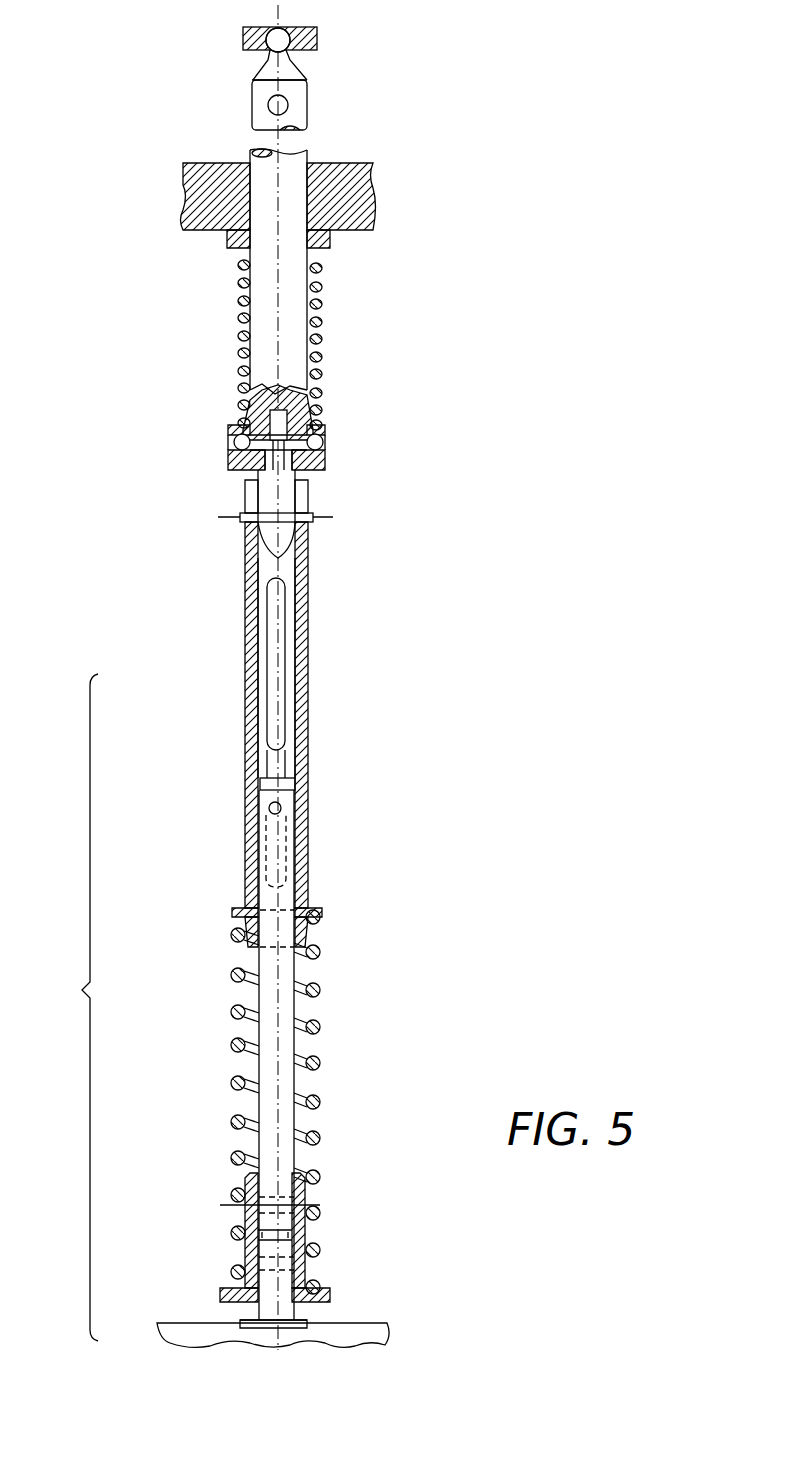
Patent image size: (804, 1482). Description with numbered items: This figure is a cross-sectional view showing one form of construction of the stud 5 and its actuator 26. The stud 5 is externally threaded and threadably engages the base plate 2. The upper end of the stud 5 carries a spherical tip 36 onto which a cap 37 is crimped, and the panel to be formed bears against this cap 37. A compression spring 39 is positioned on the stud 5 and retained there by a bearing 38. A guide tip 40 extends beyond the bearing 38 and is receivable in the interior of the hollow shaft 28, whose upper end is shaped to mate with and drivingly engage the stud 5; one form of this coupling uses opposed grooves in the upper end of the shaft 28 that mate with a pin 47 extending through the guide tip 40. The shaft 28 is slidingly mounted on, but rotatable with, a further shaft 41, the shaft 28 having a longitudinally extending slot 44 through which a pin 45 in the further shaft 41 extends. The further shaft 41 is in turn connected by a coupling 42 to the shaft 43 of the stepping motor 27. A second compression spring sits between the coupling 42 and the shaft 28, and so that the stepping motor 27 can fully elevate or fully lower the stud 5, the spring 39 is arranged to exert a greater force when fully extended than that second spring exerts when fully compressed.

The base plate 2 is at (360, 207).
The stud 5 is at (303, 115).
The actuator 26 is at (66, 1007).
The stepping motor 27 is at (340, 1333).
The shaft 28 is at (312, 850).
The spherical tip 36 is at (270, 62).
The cap 37 is at (320, 45).
The bearing 38 is at (330, 452).
The compression spring 39 is at (325, 342).
The guide tip 40 is at (300, 538).
The further shaft 41 is at (283, 1045).
The coupling 42 is at (318, 1248).
The shaft of the stepping motor 43 is at (262, 1313).
The longitudinally extending slot 44 is at (285, 715).
The pin 45 is at (272, 808).
The pin 47 is at (240, 520).